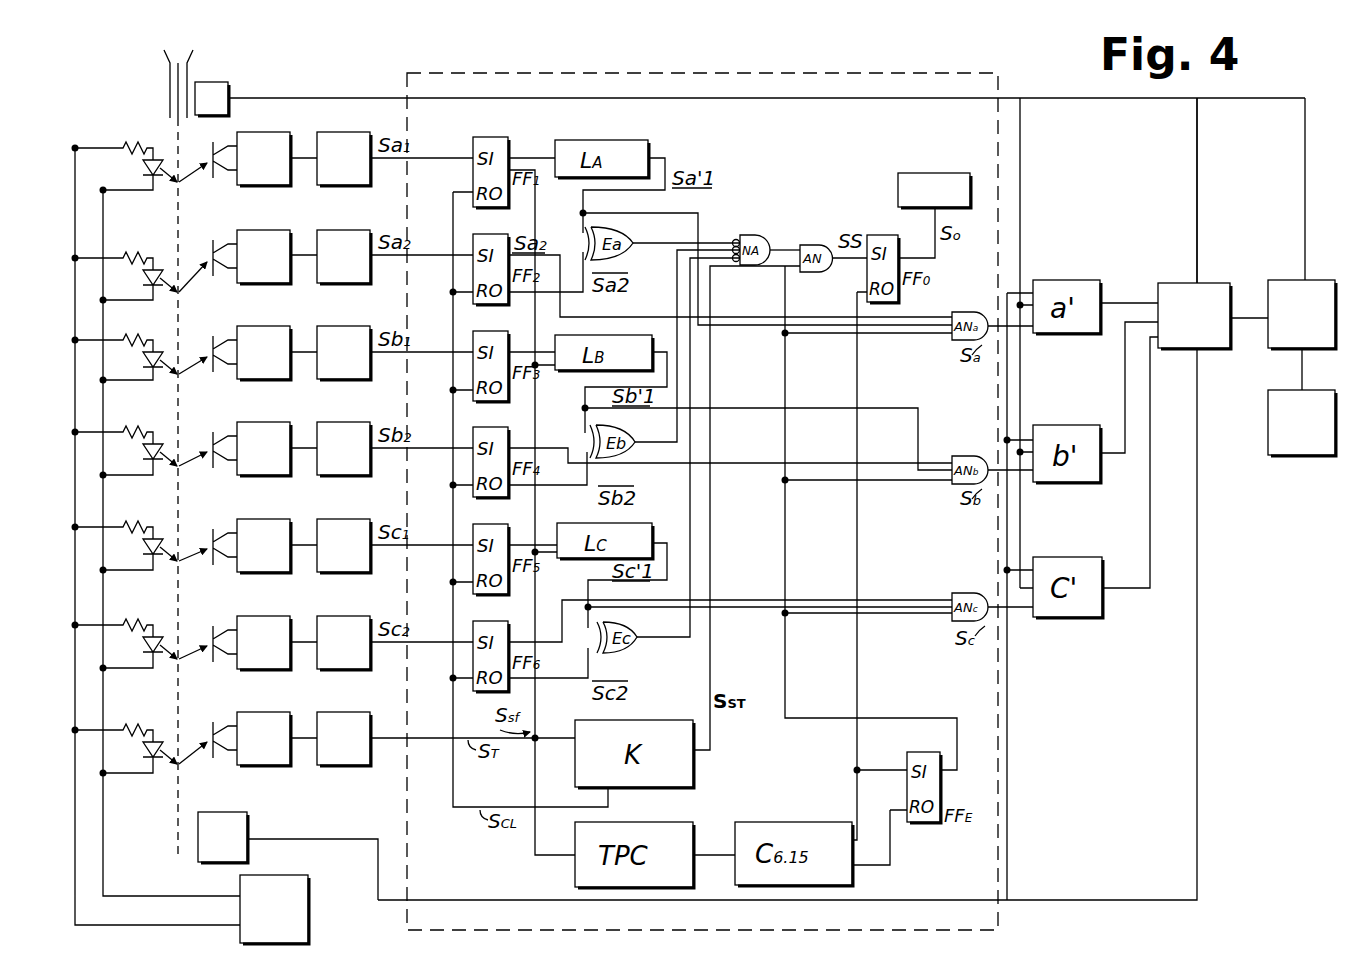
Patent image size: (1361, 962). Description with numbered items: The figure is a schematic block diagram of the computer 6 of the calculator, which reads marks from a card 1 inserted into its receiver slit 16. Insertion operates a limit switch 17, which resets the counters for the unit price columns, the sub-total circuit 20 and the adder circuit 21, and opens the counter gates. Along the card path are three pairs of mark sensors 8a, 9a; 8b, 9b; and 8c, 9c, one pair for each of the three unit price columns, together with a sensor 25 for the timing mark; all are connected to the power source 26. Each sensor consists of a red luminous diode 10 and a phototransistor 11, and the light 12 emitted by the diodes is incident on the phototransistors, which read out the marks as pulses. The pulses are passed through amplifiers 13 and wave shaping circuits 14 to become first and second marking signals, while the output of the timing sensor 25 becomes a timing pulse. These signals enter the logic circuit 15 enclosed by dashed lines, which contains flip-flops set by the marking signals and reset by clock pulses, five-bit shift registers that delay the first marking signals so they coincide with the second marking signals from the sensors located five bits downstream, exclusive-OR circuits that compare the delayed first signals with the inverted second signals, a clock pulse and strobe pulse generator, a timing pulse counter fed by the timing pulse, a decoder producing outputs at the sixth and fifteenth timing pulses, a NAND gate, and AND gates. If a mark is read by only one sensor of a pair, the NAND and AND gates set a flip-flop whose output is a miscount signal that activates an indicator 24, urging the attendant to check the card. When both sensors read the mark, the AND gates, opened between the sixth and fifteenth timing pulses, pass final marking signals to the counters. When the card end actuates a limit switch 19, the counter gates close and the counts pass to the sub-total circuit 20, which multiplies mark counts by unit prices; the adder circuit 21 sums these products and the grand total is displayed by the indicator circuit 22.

The card 1 is at (180, 64).
The computer 6 is at (348, 59).
The logic circuit 15 is at (862, 68).
The receiver slit 16 is at (166, 80).
The limit switch 17 is at (212, 99).
The mark sensor 8a is at (162, 164).
The mark sensor 9a is at (191, 276).
The mark sensor 8b is at (169, 374).
The mark sensor 9b is at (174, 467).
The mark sensor 8c is at (172, 562).
The mark sensor 9c is at (172, 660).
The luminous diode 10 is at (118, 459).
The phototransistor 11 is at (222, 182).
The light 12 is at (165, 480).
The amplifier 13 is at (264, 449).
The wave shaping circuit 14 is at (344, 449).
The limit switch 19 is at (223, 837).
The sub-total circuit 20 is at (1194, 316).
The adder circuit 21 is at (1302, 314).
The indicator circuit 22 is at (1302, 423).
The indicator 24 is at (934, 190).
The timing mark sensor 25 is at (194, 745).
The power source 26 is at (274, 909).